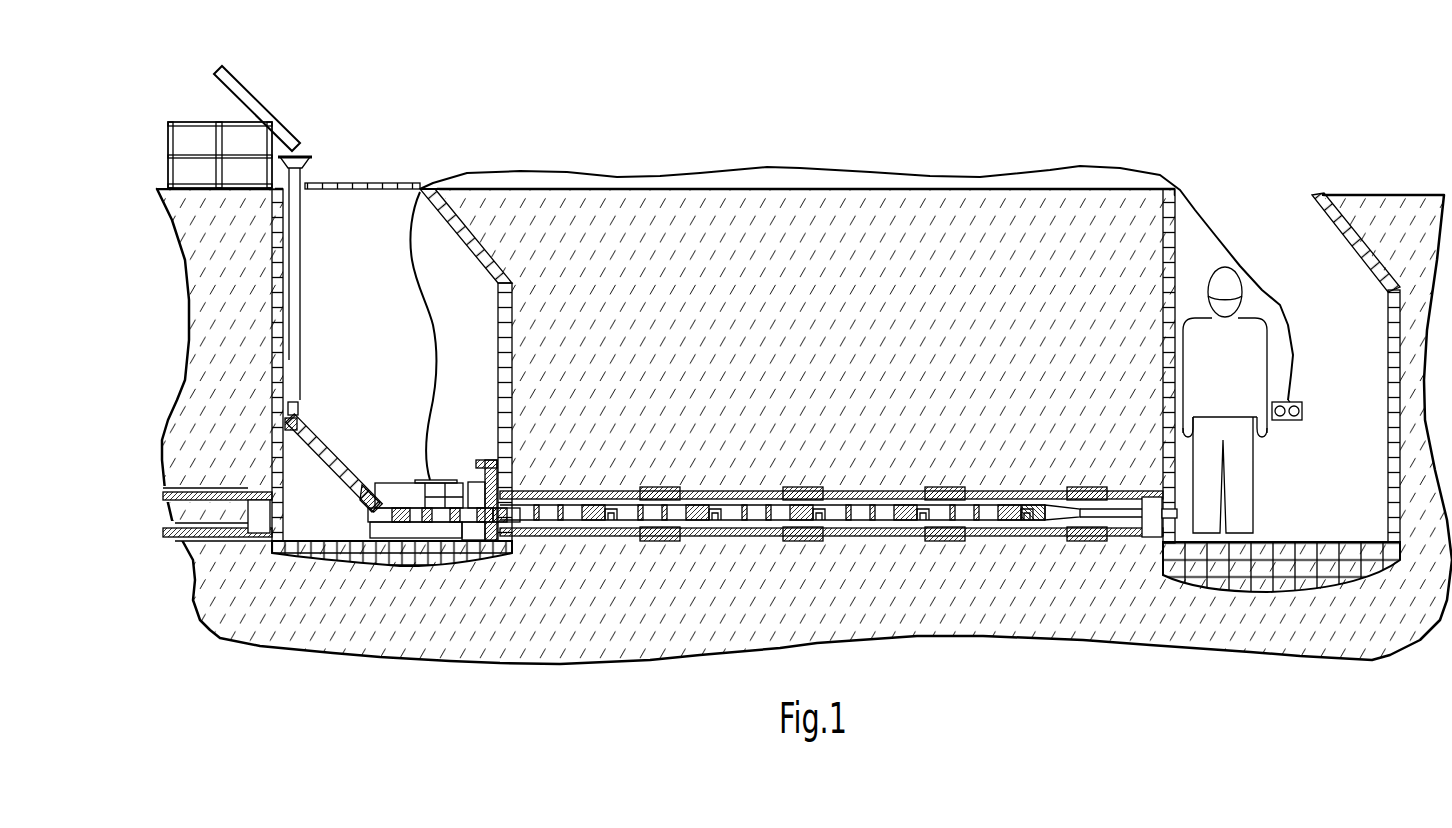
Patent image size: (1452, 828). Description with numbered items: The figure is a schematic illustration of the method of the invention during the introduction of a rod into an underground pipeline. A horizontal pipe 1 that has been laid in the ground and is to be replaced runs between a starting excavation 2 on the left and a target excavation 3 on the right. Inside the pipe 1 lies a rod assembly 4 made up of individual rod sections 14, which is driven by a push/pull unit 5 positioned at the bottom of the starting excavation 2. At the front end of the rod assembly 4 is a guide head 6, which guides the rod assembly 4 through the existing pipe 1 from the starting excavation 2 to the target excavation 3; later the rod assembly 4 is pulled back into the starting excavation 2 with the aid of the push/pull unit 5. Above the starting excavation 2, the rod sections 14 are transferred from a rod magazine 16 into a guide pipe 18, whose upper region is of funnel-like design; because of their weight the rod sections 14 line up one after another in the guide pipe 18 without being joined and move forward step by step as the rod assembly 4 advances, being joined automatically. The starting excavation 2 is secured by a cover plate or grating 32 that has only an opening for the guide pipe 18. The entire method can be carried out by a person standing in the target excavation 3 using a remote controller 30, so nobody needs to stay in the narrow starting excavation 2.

The horizontal pipe 1 is at (1010, 540).
The starting excavation 2 is at (372, 227).
The target excavation 3 is at (1287, 230).
The rod assembly 4 is at (762, 540).
The push/pull unit 5 is at (396, 437).
The guide head 6 is at (1125, 540).
The rod sections 14 is at (258, 101).
The rod magazine 16 is at (197, 140).
The guide pipe 18 is at (299, 252).
The remote controller 30 is at (1292, 337).
The grating 32 is at (318, 184).